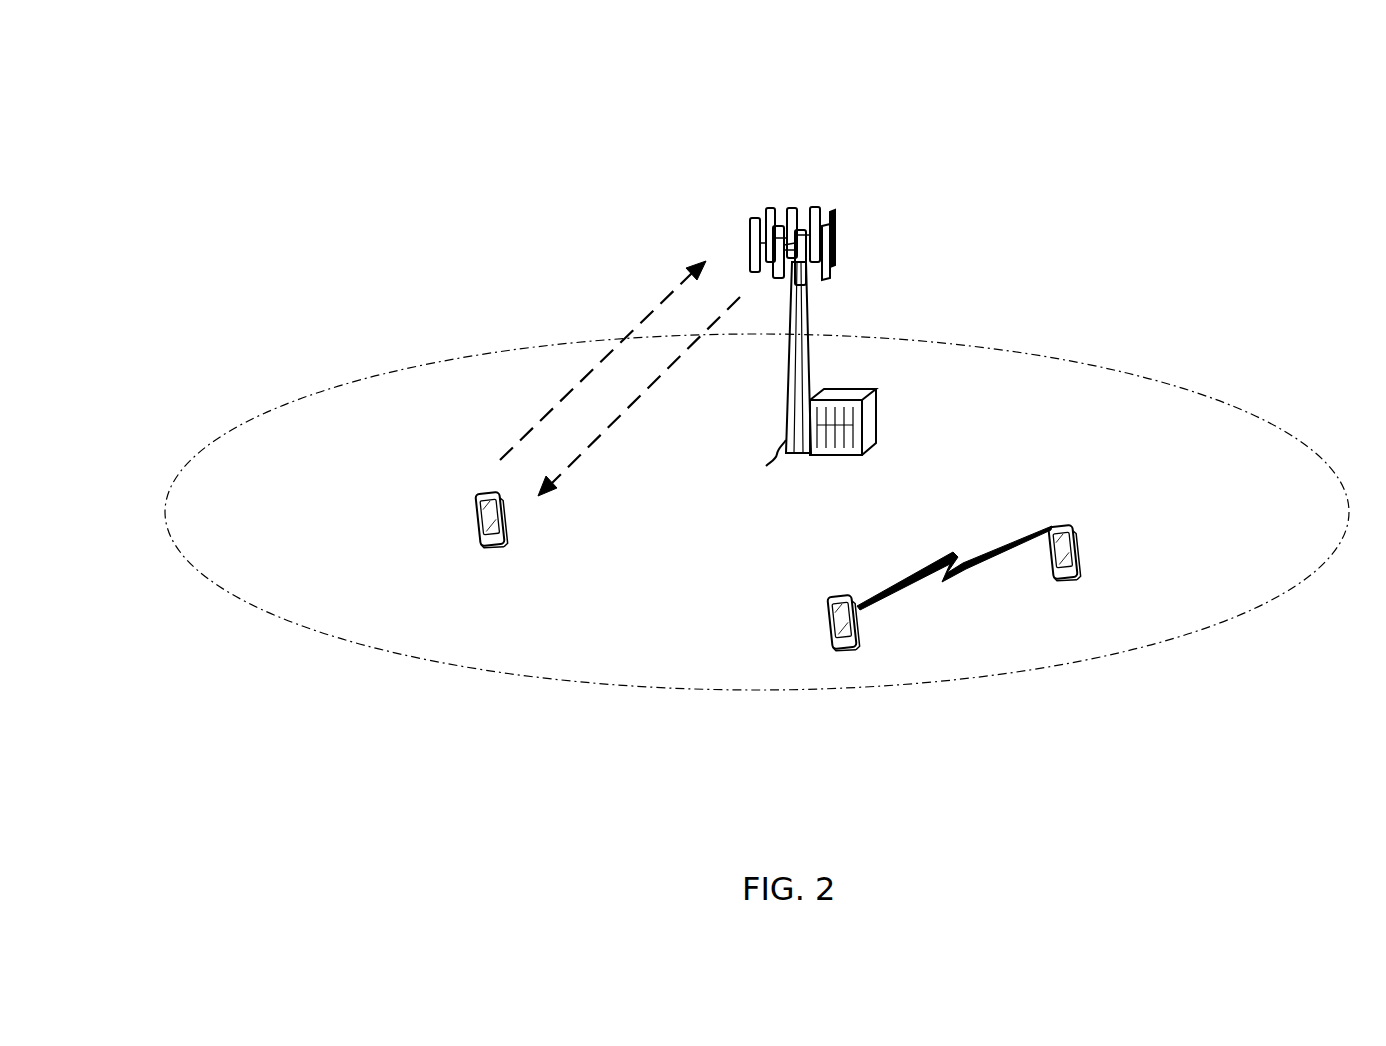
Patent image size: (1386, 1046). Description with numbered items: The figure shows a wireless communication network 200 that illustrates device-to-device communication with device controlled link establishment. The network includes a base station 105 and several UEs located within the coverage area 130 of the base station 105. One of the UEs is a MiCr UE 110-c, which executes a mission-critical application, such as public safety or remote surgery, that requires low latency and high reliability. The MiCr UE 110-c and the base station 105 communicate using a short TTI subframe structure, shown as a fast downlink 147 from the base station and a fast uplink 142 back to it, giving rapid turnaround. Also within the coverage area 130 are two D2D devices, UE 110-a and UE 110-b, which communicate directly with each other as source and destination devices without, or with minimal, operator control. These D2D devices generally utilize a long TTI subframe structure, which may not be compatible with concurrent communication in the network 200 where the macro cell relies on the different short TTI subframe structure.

The wireless communication network 200 is at (170, 86).
The base station 105 is at (785, 450).
The UE 110-a is at (1058, 573).
The UE 110-b is at (830, 602).
The MiCr UE 110-c is at (478, 498).
The coverage area 130 is at (680, 690).
The uplink 142 is at (530, 432).
The downlink 147 is at (658, 386).